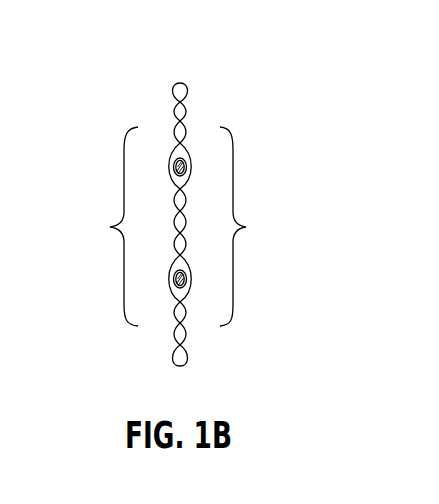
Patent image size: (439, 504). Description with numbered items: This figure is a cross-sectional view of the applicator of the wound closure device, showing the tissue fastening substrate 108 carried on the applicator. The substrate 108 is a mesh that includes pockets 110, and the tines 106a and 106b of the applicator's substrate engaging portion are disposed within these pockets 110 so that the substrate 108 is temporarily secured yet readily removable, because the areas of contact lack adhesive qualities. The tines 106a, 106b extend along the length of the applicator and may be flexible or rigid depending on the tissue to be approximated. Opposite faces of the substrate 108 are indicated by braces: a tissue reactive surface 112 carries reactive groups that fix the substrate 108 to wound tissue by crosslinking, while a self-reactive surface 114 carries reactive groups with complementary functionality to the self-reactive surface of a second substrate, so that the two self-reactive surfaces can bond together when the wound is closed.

The tissue fastening substrate 108 is at (177, 81).
The pockets 110 is at (173, 153).
The tine 106a is at (185, 164).
The tine 106b is at (186, 286).
The tissue reactive surface 112 is at (104, 226).
The self-reactive surface 114 is at (254, 226).